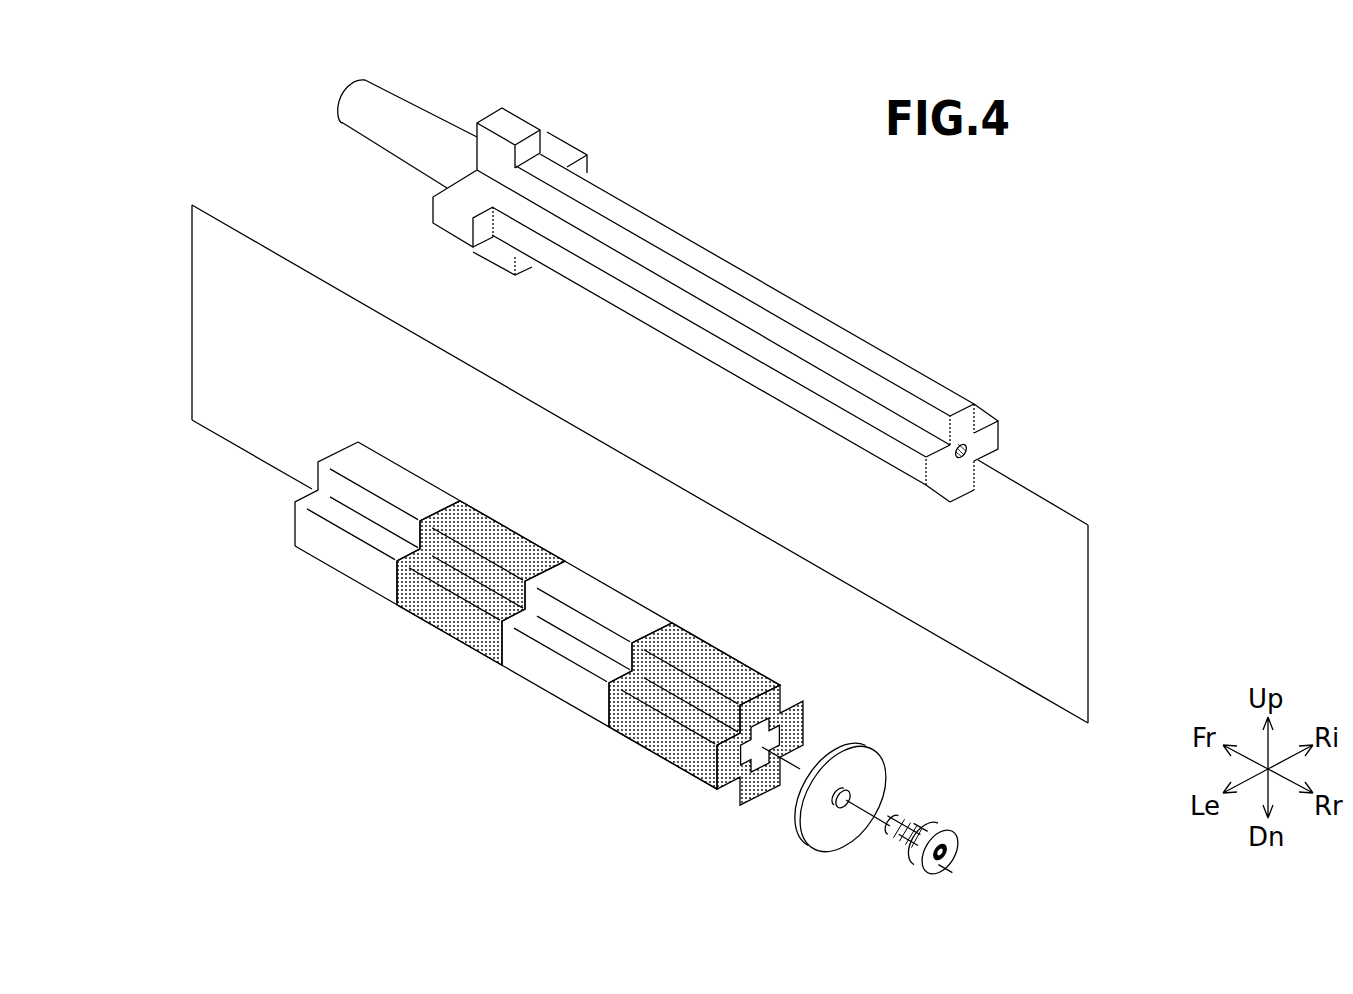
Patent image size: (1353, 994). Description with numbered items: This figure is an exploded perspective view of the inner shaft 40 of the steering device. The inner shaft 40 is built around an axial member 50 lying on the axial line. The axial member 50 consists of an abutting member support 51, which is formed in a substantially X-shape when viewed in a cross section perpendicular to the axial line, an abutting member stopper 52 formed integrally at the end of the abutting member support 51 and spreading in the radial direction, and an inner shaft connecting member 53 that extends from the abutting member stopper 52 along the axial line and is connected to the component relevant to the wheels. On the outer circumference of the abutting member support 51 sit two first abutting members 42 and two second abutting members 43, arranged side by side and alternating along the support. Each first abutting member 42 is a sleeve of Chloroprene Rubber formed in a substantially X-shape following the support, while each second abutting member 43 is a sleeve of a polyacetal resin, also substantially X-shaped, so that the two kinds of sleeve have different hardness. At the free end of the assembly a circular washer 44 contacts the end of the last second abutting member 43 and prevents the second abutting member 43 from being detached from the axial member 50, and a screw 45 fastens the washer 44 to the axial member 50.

The inner shaft 40 is at (1060, 254).
The first abutting member 42 is at (445, 636).
The second abutting member 43 is at (339, 577).
The circular washer 44 is at (817, 846).
The screw 45 is at (922, 870).
The axial member 50 is at (800, 205).
The abutting member support 51 is at (722, 256).
The abutting member stopper 52 is at (568, 145).
The inner shaft connecting member 53 is at (398, 98).